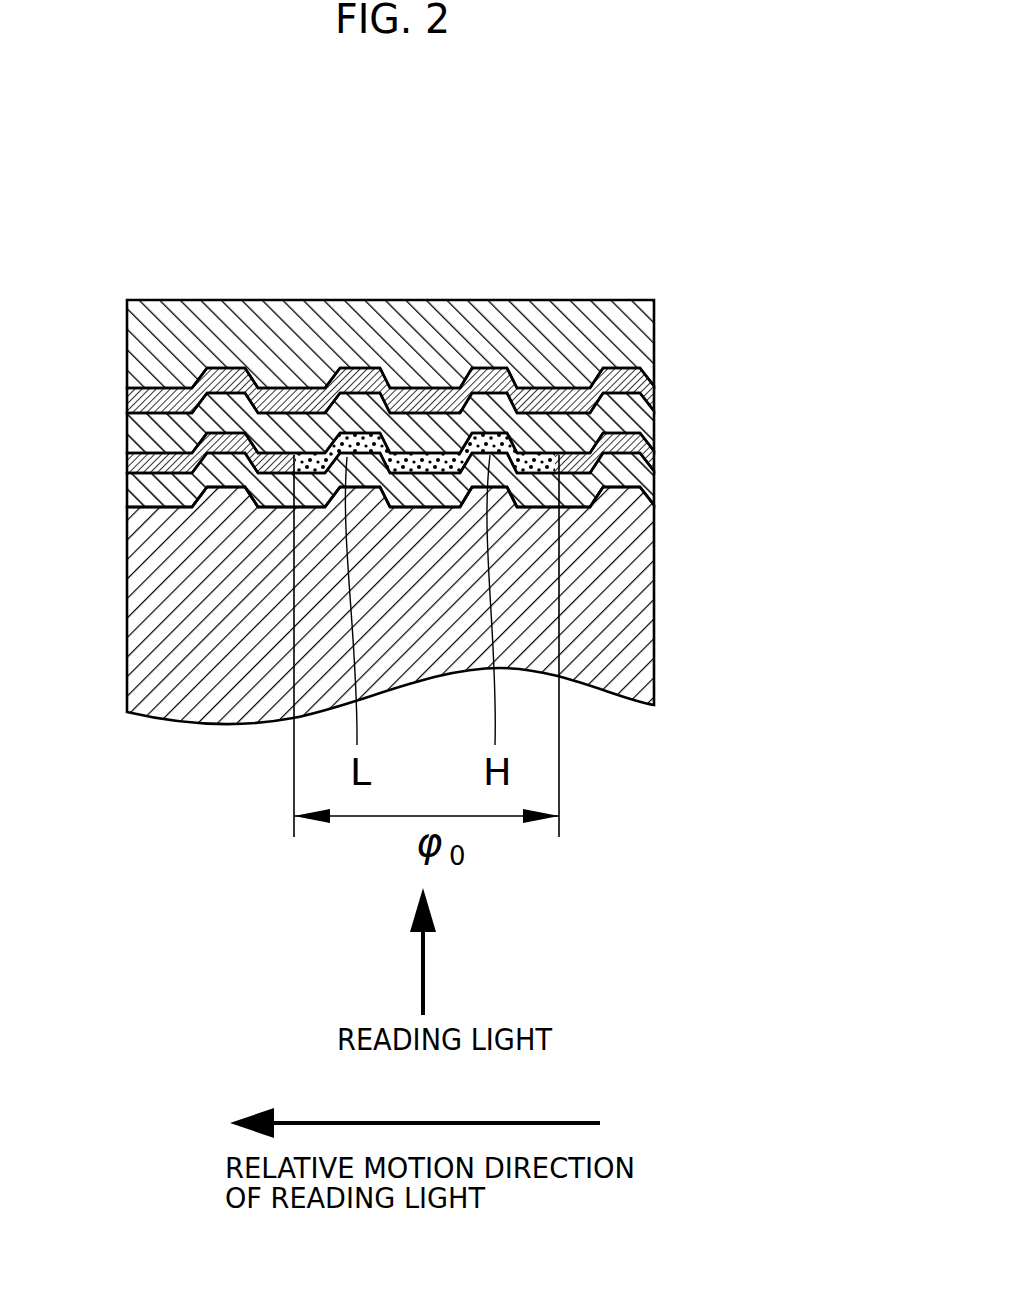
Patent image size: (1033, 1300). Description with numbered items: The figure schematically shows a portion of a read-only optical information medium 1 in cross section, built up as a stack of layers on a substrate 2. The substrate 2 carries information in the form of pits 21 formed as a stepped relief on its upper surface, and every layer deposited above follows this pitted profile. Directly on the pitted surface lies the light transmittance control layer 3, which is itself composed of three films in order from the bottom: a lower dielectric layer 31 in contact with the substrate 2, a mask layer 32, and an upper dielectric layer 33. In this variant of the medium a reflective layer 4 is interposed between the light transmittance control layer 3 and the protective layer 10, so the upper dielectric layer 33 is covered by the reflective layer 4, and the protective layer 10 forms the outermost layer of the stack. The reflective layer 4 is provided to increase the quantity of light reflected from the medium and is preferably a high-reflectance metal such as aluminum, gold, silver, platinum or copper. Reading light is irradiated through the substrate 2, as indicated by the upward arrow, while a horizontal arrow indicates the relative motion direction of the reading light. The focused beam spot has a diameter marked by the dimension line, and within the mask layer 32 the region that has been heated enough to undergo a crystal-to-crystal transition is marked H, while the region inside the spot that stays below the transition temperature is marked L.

The optical information medium 1 is at (456, 525).
The substrate 2 is at (655, 580).
The pits 21 is at (127, 493).
The light transmittance control layer 3 is at (506, 457).
The lower dielectric layer 31 is at (474, 492).
The mask layer 32 is at (655, 452).
The upper dielectric layer 33 is at (655, 420).
The reflective layer 4 is at (655, 392).
The protective layer 10 is at (655, 328).